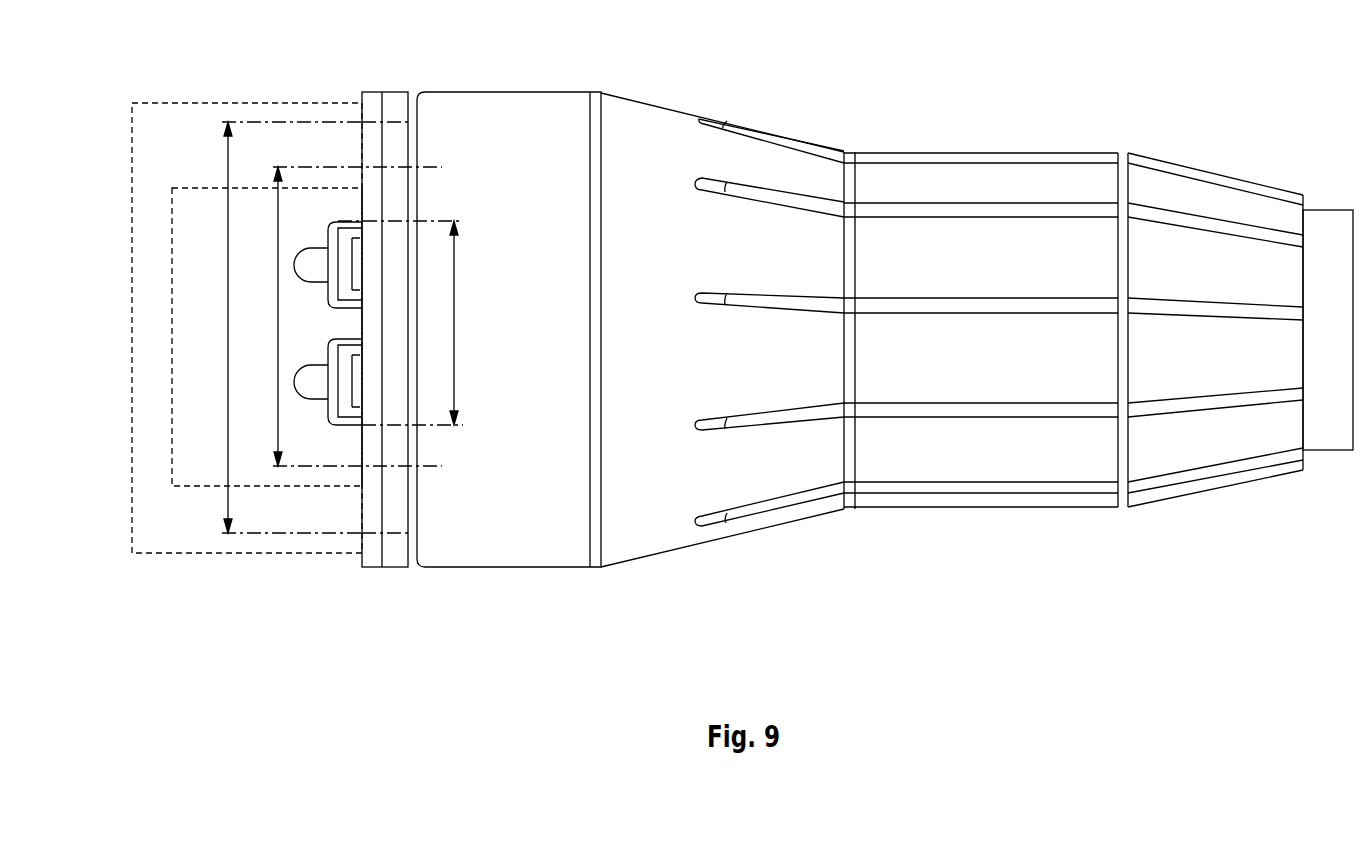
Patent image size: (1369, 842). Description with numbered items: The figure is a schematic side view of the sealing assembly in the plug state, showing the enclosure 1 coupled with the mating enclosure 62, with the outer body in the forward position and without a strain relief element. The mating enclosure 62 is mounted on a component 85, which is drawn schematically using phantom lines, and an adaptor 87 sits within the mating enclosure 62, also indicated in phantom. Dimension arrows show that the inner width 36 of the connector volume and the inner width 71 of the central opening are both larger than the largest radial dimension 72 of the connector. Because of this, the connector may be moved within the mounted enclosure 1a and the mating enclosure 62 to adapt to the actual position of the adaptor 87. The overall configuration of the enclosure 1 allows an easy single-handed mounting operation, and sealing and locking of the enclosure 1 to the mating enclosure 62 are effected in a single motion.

The sealing assembly 1 is at (916, 76).
The mounted enclosure 1a is at (1063, 76).
The inner width of the connector volume 36 is at (277, 292).
The mating enclosure 62 is at (380, 70).
The inner width of the central opening 71 is at (228, 322).
The largest radial dimension of the connector 72 is at (455, 323).
The component 85 is at (200, 103).
The adaptor 87 is at (190, 488).